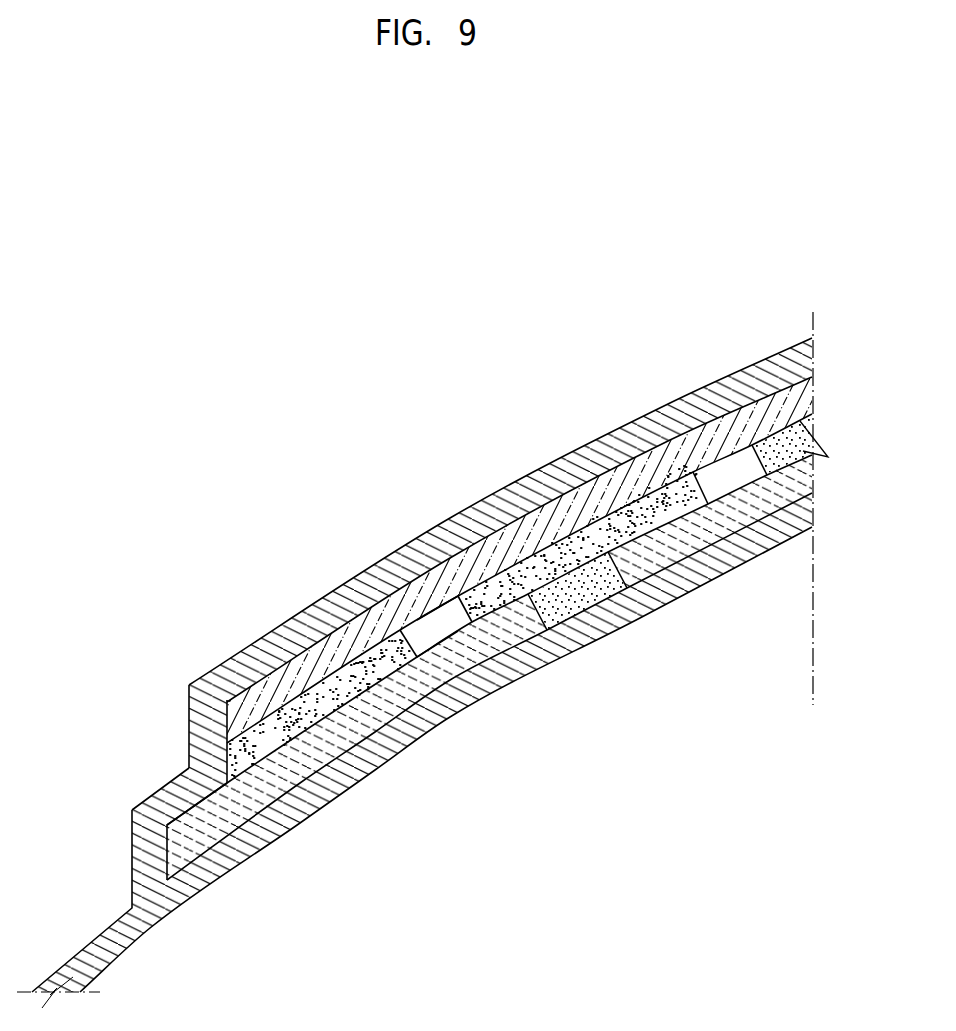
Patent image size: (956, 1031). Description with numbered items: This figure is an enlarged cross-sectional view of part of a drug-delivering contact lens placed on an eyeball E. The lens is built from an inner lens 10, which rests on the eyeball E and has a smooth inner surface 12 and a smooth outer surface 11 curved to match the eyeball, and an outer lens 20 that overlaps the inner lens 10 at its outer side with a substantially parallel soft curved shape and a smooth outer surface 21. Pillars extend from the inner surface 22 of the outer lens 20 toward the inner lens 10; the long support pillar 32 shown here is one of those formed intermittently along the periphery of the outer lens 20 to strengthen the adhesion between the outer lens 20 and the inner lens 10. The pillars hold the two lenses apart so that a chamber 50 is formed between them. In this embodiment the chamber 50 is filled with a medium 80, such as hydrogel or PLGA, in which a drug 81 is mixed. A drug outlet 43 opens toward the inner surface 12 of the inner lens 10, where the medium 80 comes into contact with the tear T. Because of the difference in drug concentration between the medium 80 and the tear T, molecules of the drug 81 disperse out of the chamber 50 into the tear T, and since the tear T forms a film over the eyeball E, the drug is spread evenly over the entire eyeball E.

The inner lens 10 is at (337, 750).
The outer surface 11 is at (273, 750).
The inner surface 12 is at (247, 860).
The outer lens 20 is at (472, 557).
The outer surface 21 is at (690, 410).
The inner surface 22 is at (663, 482).
The support pillar 32 is at (450, 635).
The drug outlet 43 is at (518, 622).
The chamber 50 is at (405, 700).
The medium 80 is at (537, 563).
The drug 81 is at (588, 524).
The tear T is at (252, 658).
The eyeball E is at (795, 610).